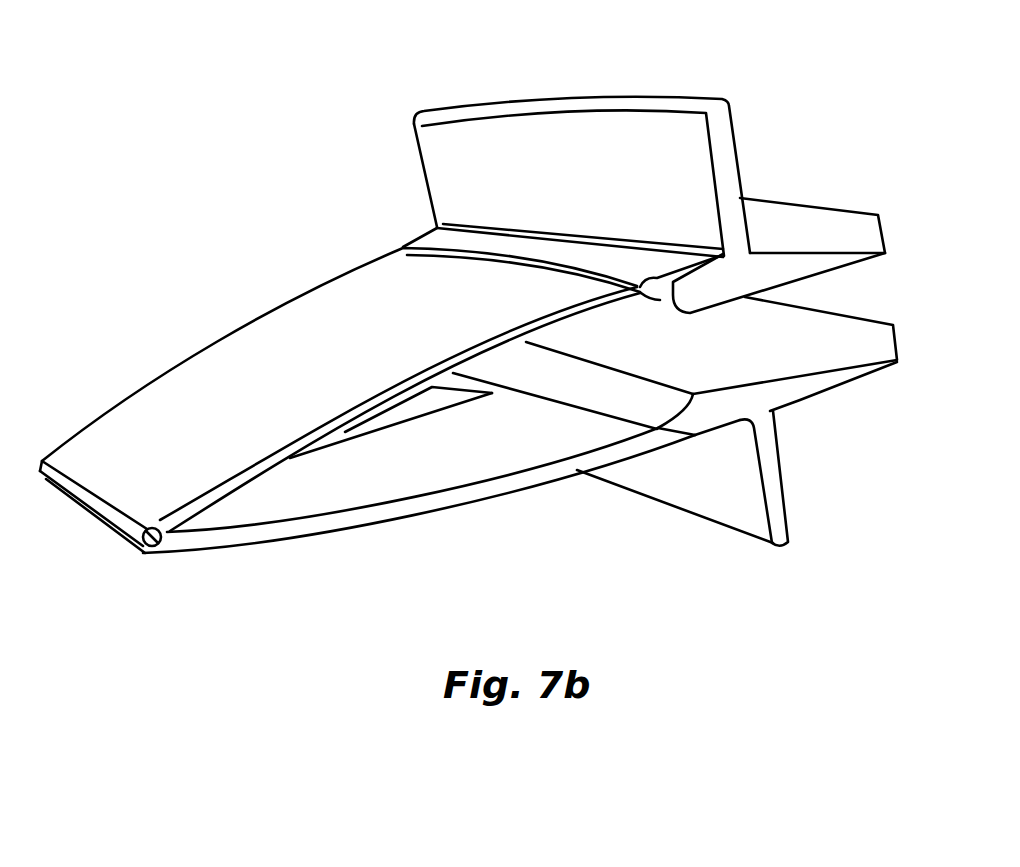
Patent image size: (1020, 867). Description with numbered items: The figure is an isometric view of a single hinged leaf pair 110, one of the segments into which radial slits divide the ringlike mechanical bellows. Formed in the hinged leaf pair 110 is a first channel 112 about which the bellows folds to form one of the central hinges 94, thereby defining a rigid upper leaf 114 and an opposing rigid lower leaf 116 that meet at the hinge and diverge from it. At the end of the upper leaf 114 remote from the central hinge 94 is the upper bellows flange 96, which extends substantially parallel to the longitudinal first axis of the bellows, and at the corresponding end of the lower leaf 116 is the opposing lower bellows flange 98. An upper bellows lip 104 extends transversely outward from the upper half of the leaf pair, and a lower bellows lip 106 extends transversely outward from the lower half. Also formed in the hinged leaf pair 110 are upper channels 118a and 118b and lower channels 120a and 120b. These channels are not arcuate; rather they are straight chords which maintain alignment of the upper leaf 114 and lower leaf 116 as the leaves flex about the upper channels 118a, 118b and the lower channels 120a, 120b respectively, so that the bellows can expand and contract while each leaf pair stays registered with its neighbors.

The central hinge 94 is at (102, 522).
The upper bellows flange 96 is at (720, 130).
The lower bellows flange 98 is at (782, 527).
The upper bellows lip 104 is at (788, 262).
The lower bellows lip 106 is at (793, 380).
The hinged leaf pair 110 is at (250, 285).
The first channel 112 is at (145, 553).
The rigid upper leaf 114 is at (190, 393).
The rigid lower leaf 116 is at (300, 485).
The upper channel 118a is at (638, 287).
The upper channel 118b is at (638, 308).
The lower channel 120a is at (660, 418).
The lower channel 120b is at (665, 433).